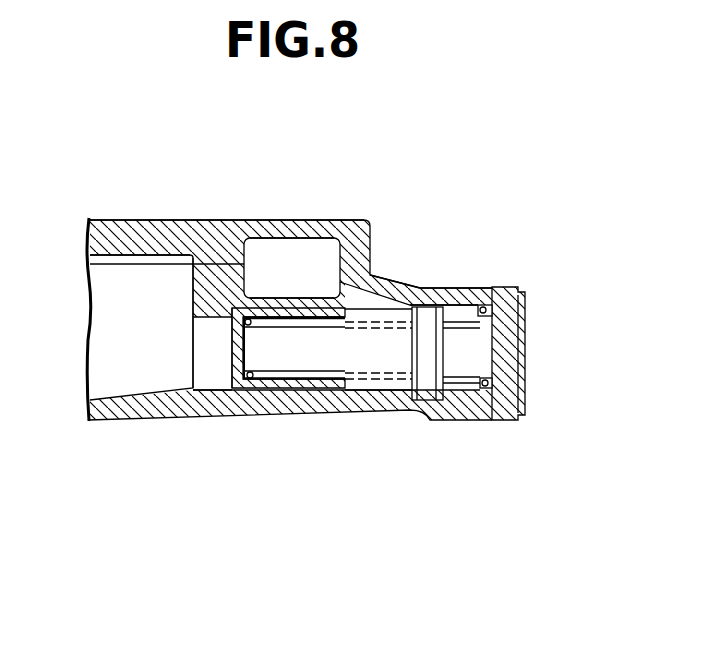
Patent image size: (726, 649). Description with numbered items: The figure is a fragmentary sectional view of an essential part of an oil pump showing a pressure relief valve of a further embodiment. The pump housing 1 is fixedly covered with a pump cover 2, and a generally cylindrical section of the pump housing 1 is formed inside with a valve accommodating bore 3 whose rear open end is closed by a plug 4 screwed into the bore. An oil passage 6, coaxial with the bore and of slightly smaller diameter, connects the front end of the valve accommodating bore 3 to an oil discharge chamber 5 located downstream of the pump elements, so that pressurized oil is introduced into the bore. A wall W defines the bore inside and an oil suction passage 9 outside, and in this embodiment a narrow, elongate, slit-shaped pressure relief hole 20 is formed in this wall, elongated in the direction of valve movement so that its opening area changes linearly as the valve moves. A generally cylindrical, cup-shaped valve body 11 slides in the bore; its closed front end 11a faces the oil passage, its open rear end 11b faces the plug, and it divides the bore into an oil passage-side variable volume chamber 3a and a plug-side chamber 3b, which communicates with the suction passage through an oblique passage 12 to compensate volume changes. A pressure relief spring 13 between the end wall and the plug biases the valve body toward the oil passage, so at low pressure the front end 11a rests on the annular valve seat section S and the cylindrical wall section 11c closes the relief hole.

The pump housing 1 is at (124, 410).
The pump cover 2 is at (128, 229).
The valve accommodating bore 3 is at (376, 410).
The oil passage-side variable volume chamber 3a is at (215, 312).
The plug-side chamber 3b is at (424, 392).
The plug 4 is at (530, 392).
The oil discharge chamber 5 is at (100, 283).
The oil passage 6 is at (200, 333).
The oil suction passage 9 is at (307, 262).
The valve body 11 is at (278, 392).
The front end 11a is at (237, 392).
The rear end 11b is at (333, 392).
The cylindrical wall section 11c is at (318, 392).
The passage 12 is at (387, 273).
The pressure relief spring 13 is at (532, 328).
The slit-shaped pressure relief hole 20 is at (270, 238).
The annular valve seat section S is at (183, 410).
The wall W is at (223, 312).